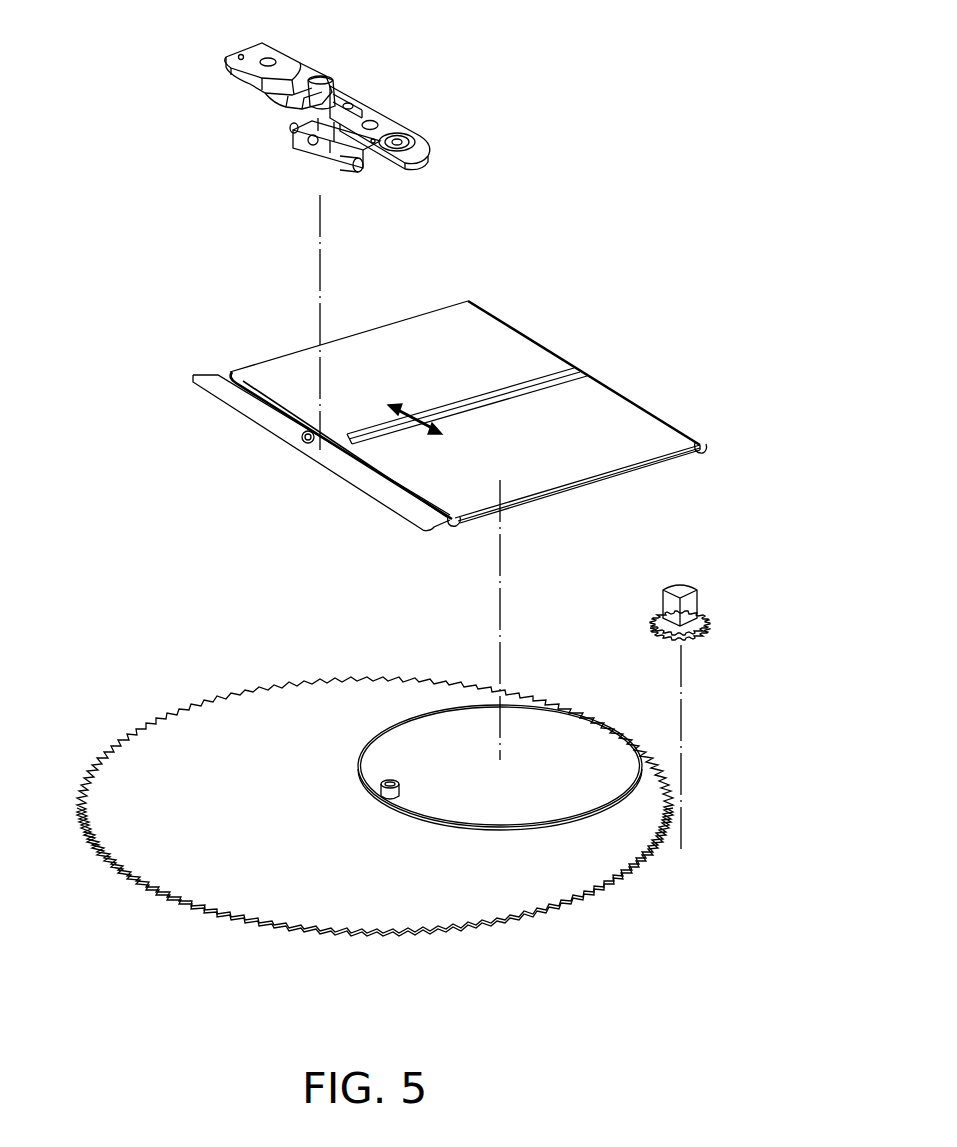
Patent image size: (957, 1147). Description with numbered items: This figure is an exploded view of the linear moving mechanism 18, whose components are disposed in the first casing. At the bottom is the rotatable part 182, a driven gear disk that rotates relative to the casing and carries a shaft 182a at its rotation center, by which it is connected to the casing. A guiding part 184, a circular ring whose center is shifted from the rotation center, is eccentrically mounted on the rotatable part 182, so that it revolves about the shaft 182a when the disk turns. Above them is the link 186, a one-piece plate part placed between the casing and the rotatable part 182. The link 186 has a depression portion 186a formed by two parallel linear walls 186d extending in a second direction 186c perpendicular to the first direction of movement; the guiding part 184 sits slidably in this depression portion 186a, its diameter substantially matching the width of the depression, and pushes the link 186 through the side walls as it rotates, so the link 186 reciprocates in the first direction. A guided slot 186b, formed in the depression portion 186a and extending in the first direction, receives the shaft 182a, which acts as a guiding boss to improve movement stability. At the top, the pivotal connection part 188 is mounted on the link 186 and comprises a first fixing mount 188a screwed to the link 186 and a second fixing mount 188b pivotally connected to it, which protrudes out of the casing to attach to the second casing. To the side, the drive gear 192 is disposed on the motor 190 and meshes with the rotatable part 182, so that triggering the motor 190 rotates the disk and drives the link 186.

The linear moving mechanism 18 is at (695, 84).
The rotatable part 182 is at (236, 717).
The shaft 182a is at (392, 782).
The guiding part 184 is at (546, 824).
The link 186 is at (471, 326).
The depression portion 186a is at (669, 478).
The guided slot 186b is at (545, 384).
The second direction 186c is at (412, 405).
The linear walls 186d is at (456, 526).
The pivotal connection part 188 is at (452, 135).
The first fixing mount 188a is at (325, 138).
The second fixing mount 188b is at (380, 122).
The motor 190 is at (668, 608).
The drive gear 192 is at (652, 629).